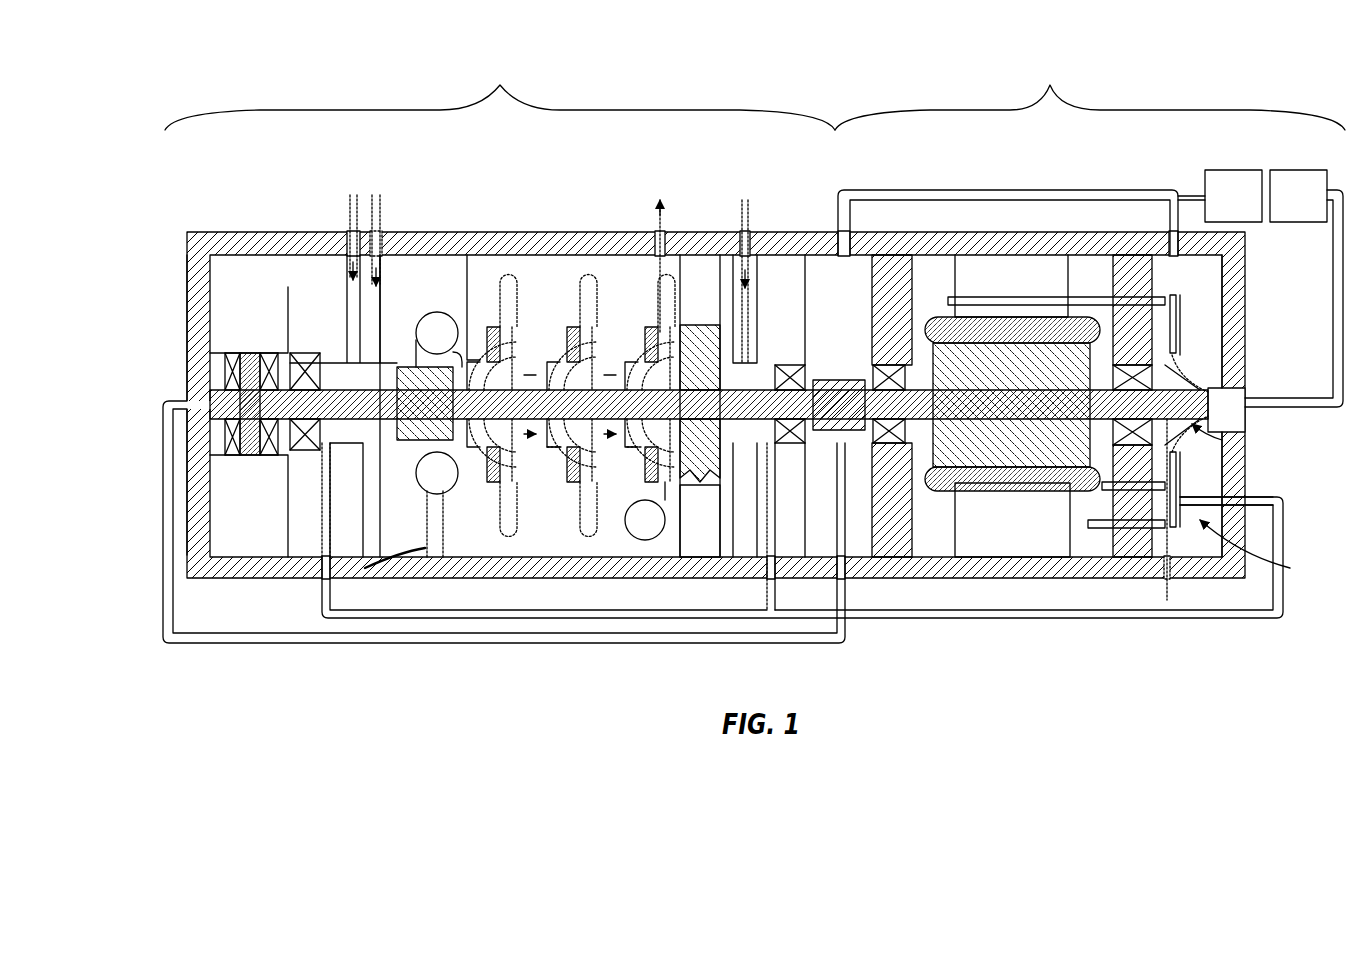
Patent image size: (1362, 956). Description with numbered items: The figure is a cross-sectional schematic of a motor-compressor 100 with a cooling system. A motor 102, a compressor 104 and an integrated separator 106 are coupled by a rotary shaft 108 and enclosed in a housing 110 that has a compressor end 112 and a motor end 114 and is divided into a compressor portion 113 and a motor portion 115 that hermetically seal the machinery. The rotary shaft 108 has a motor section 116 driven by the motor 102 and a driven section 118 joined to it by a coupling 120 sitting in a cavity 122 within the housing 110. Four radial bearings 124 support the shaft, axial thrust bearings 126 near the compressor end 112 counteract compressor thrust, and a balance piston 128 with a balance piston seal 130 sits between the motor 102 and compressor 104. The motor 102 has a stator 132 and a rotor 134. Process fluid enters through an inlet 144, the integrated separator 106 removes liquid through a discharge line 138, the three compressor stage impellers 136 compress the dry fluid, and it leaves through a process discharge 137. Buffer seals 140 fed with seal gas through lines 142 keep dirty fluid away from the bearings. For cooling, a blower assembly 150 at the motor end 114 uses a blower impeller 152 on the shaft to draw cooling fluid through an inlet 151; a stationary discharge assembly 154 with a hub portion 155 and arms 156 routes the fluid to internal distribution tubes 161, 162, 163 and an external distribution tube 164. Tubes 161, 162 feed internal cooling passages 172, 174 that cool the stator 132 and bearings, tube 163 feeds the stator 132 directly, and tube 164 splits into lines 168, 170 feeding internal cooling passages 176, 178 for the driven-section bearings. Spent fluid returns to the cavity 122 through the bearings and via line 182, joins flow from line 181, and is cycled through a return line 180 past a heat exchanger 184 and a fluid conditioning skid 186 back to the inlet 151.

The motor-compressor 100 is at (755, 77).
The motor 102 is at (1011, 405).
The compressor 104 is at (487, 272).
The integrated separator 106 is at (430, 358).
The rotary shaft 108 is at (866, 430).
The housing 110 is at (245, 232).
The compressor end 112 is at (185, 275).
The compressor portion 113 is at (500, 85).
The motor end 114 is at (1250, 410).
The motor portion 115 is at (1068, 70).
The motor section 116 is at (938, 388).
The driven section 118 is at (742, 375).
The coupling 120 is at (820, 440).
The cavity 122 is at (866, 406).
The radial bearings 124 is at (305, 353).
The axial thrust bearings 126 is at (245, 353).
The balance piston 128 is at (705, 326).
The balance piston seal 130 is at (700, 482).
The stator 132 is at (1050, 485).
The rotor 134 is at (1003, 470).
The compressor stage impellers 136 is at (608, 480).
The process discharge 137 is at (658, 234).
The discharge line 138 is at (390, 569).
The buffer seals 140 is at (345, 440).
The lines 142 is at (348, 292).
The inlet 144 is at (373, 240).
The blower assembly 150 is at (1239, 380).
The inlet 151 is at (1232, 370).
The blower impeller 152 is at (1195, 395).
The discharge assembly 154 is at (1264, 551).
The hub portion 155 is at (1223, 440).
The arms 156 is at (1192, 310).
The internal distribution tube 161 is at (1125, 528).
The internal distribution tube 162 is at (1030, 297).
The internal distribution tube 163 is at (1163, 540).
The external distribution tube 164 is at (1270, 505).
The line 168 is at (765, 590).
The line 170 is at (320, 588).
The internal cooling passage 172 is at (1085, 560).
The internal cooling passage 174 is at (940, 270).
The internal cooling passage 176 is at (768, 505).
The internal cooling passage 178 is at (325, 417).
The return line 180 is at (880, 192).
The line 181 is at (1172, 212).
The line 182 is at (166, 628).
The heat exchanger 184 is at (1233, 196).
The fluid conditioning skid 186 is at (1294, 288).